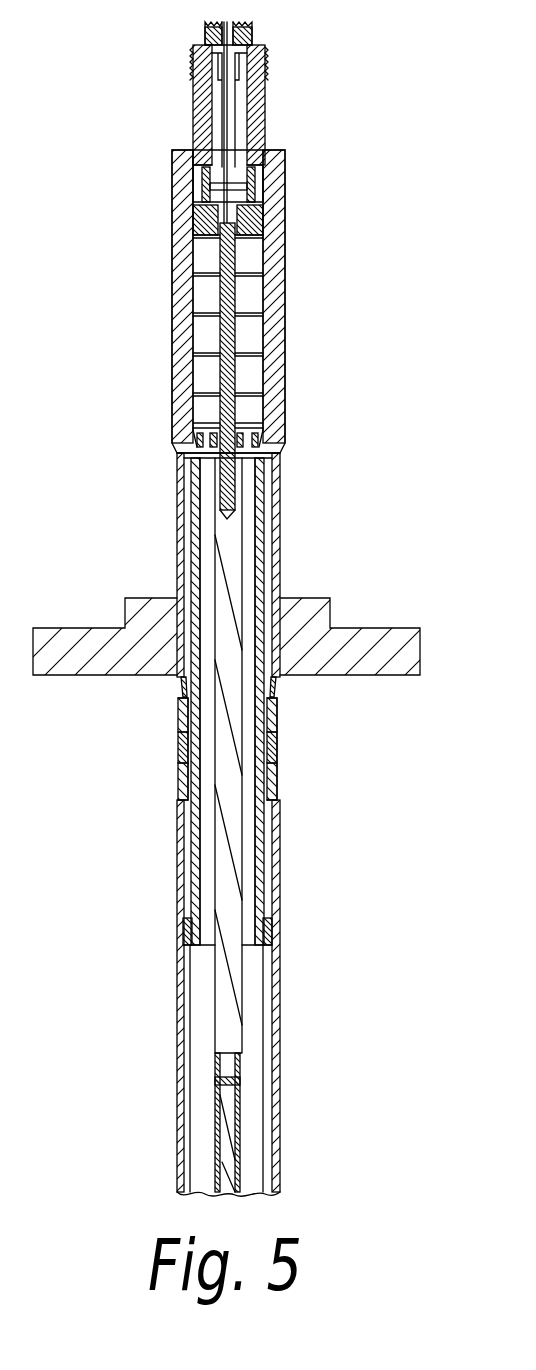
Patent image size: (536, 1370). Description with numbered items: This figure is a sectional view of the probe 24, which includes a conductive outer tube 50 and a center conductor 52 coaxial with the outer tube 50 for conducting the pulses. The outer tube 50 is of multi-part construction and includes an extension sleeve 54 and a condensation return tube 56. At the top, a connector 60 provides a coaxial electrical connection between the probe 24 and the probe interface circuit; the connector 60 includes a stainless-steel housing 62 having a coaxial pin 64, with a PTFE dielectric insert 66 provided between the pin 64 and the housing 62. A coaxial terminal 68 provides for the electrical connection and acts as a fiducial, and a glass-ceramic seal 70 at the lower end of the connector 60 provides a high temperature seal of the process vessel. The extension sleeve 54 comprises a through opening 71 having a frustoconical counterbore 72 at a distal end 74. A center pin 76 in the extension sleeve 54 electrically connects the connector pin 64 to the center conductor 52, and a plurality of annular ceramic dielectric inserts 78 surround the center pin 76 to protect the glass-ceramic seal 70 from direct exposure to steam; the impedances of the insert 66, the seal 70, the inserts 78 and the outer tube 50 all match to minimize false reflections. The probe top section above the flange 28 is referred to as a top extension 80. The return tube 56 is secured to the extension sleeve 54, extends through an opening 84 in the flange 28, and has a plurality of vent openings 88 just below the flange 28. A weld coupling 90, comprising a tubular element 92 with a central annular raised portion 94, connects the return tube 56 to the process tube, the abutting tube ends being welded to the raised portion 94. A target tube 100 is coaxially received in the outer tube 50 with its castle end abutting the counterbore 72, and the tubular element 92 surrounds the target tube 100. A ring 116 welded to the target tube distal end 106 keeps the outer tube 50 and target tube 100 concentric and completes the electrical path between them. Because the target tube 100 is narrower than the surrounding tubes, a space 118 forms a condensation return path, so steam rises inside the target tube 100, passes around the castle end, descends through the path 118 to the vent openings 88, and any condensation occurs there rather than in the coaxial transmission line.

The probe 24 is at (133, 345).
The flange 28 is at (47, 638).
The conductive outer tube 50 is at (304, 893).
The center conductor 52 is at (244, 1015).
The extension sleeve 54 is at (280, 324).
The condensation return tube 56 is at (282, 469).
The connector 60 is at (272, 100).
The stainless-steel housing 62 is at (264, 125).
The coaxial pin 64 is at (228, 108).
The PTFE dielectric insert 66 is at (217, 130).
The coaxial terminal 68 is at (252, 38).
The glass-ceramic seal 70 is at (254, 180).
The through opening 71 is at (250, 194).
The frustoconical counterbore 72 is at (240, 420).
The distal end 74 is at (279, 452).
The center pin 76 is at (228, 292).
The annular ceramic dielectric inserts 78 is at (203, 337).
The top extension 80 is at (363, 138).
The opening 84 is at (244, 681).
The vent openings 88 is at (181, 688).
The weld coupling 90 is at (176, 742).
The tubular element 92 is at (274, 722).
The central annular raised portion 94 is at (274, 757).
The target tube 100 is at (262, 832).
The target tube distal end 106 is at (246, 948).
The ring 116 is at (184, 924).
The condensation return path 118 is at (268, 557).